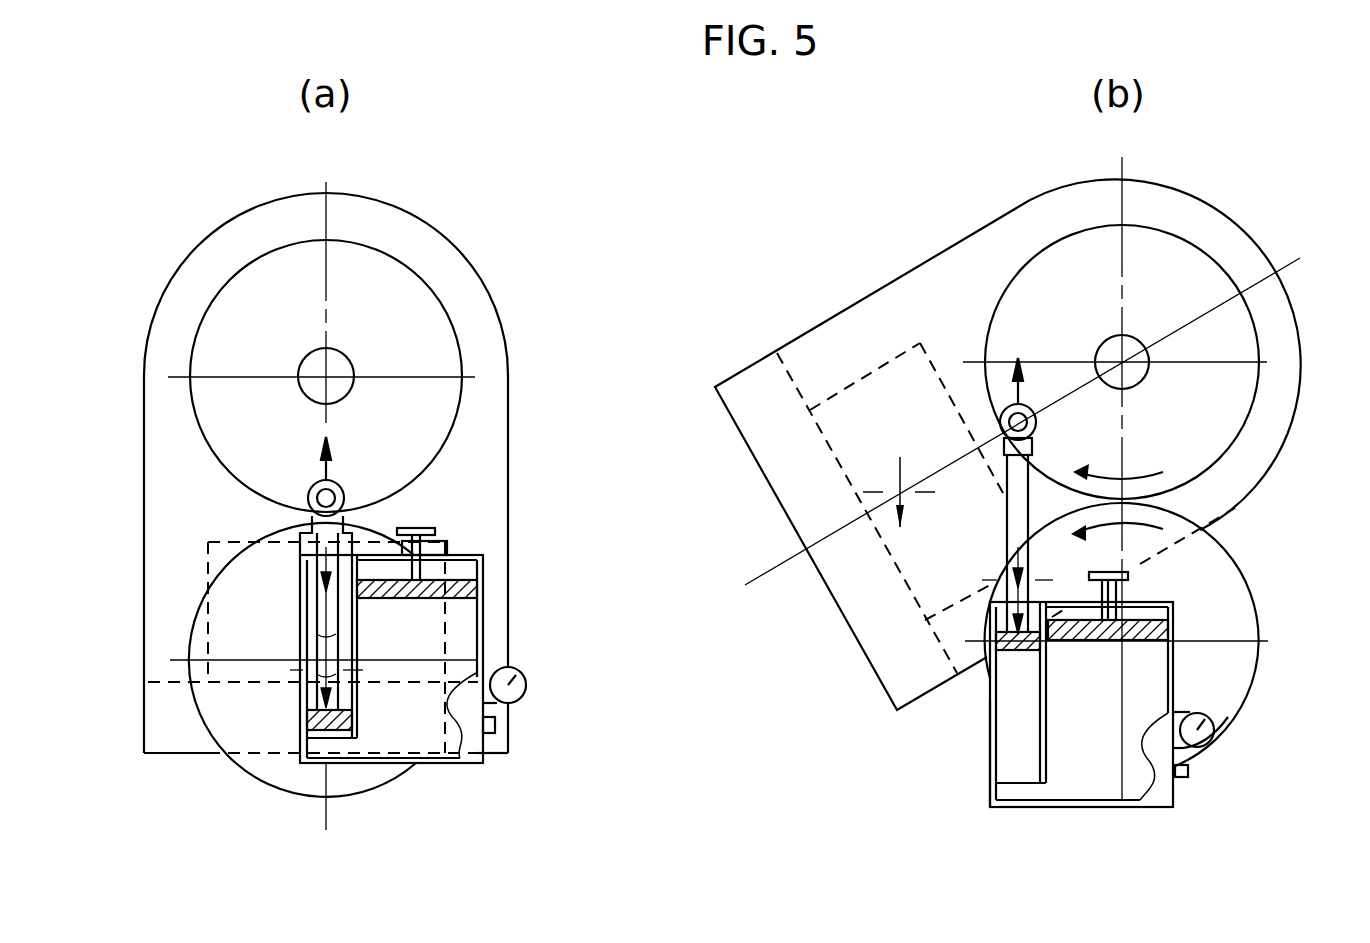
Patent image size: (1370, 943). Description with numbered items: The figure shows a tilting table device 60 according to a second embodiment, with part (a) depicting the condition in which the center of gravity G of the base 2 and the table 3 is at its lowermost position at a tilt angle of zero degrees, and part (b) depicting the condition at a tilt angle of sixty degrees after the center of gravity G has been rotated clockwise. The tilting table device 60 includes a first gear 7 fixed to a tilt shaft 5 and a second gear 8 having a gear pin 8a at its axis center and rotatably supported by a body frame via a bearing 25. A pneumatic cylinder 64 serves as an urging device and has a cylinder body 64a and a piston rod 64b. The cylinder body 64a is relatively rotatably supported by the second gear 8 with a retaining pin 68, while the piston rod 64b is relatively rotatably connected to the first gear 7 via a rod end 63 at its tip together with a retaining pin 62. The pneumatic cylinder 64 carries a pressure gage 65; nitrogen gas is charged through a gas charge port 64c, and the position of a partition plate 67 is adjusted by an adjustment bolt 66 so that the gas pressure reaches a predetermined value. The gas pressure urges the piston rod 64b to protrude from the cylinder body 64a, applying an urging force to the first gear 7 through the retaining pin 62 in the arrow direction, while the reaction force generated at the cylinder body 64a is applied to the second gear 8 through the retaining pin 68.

The base 2 is at (853, 302).
The table 3 is at (921, 340).
The tilt shaft 5 is at (1128, 333).
The first gear 7 is at (1080, 230).
The second gear 8 is at (1254, 596).
The gear pin 8a is at (1117, 677).
The bearing 25 is at (1098, 656).
The tilting table device 60 is at (878, 190).
The retaining pin 62 is at (1002, 419).
The rod end 63 is at (1004, 444).
The pneumatic cylinder 64 is at (1073, 808).
The cylinder body 64a is at (991, 780).
The piston rod 64b is at (1006, 508).
The gas charge port 64c is at (1185, 778).
The pressure gage 65 is at (1233, 718).
The adjustment bolt 66 is at (1130, 577).
The partition plate 67 is at (1170, 626).
The retaining pin 68 is at (1003, 585).
The center of gravity G is at (898, 490).